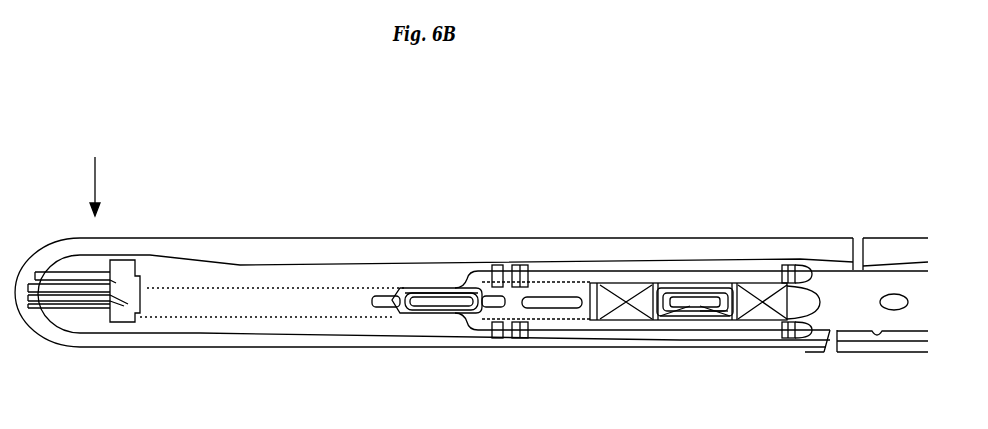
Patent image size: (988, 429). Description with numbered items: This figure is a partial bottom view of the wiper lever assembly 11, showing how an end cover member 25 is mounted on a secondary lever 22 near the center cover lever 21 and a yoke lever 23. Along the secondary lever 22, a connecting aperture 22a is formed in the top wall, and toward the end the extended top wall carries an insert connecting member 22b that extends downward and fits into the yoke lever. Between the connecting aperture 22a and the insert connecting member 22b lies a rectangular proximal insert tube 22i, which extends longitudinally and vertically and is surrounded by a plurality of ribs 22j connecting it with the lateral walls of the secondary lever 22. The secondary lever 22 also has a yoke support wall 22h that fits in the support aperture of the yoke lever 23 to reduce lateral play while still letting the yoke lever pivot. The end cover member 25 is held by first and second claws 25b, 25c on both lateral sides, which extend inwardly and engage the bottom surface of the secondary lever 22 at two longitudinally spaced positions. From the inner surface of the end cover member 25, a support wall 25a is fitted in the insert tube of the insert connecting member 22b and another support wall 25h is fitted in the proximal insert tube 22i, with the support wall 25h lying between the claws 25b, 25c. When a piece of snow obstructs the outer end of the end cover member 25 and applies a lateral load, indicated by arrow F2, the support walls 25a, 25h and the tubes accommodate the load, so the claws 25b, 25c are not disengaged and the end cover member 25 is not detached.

The wiper lever assembly 11 is at (260, 209).
The center cover lever 21 is at (876, 238).
The secondary lever 22 is at (620, 341).
The connecting aperture 22a is at (413, 314).
The insert connecting member 22b is at (410, 286).
The yoke support wall 22h is at (567, 308).
The proximal insert tube 22i is at (730, 322).
The ribs 22j is at (743, 282).
The yoke lever 23 is at (290, 320).
The end cover member 25 is at (300, 238).
The support wall 25a is at (440, 289).
The first claw 25b is at (527, 268).
The second claw 25c is at (803, 266).
The support wall 25h is at (663, 292).
The arrow F2 is at (104, 182).